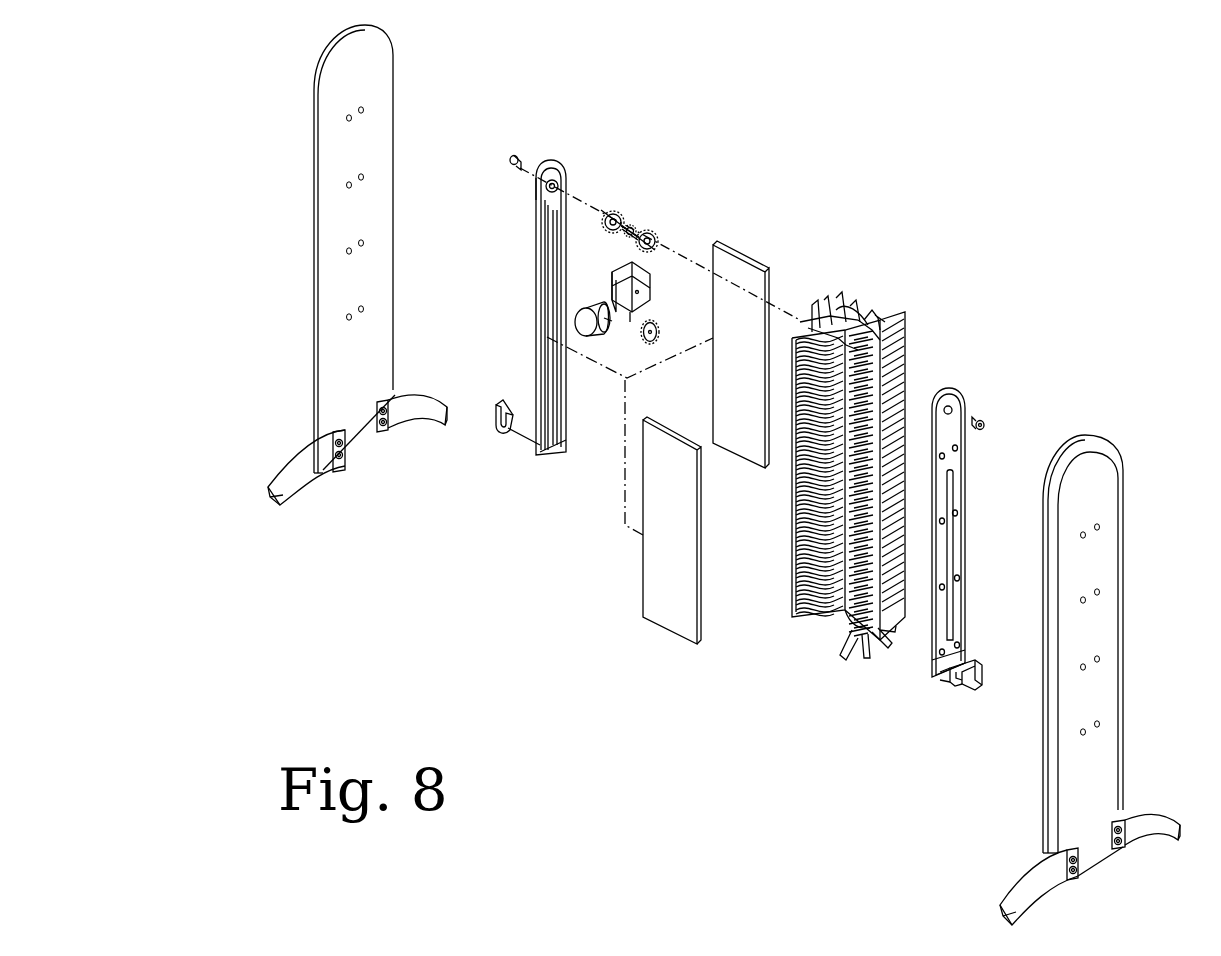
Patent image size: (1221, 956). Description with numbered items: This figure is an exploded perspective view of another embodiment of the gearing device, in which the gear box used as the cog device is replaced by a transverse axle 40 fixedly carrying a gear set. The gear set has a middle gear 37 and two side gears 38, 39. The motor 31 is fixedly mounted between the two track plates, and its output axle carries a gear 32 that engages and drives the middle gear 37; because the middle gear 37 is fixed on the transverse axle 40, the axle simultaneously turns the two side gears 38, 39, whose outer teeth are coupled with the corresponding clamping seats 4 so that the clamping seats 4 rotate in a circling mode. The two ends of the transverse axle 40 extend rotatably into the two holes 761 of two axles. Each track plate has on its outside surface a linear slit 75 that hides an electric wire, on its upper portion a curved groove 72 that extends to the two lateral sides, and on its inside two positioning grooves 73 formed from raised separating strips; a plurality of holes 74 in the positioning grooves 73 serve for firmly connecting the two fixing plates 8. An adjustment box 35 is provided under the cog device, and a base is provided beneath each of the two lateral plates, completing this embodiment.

The clamping seat 4 is at (845, 305).
The fixing plate 8 is at (743, 273).
The motor 31 is at (584, 312).
The gear 32 is at (654, 331).
The adjustment box 35 is at (958, 698).
The middle gear 37 is at (633, 220).
The side gear 38 is at (613, 208).
The side gear 39 is at (655, 232).
The transverse axle 40 is at (660, 238).
The curved groove 72 is at (549, 232).
The positioning groove 73 is at (553, 306).
The hole 74 is at (960, 578).
The linear slit 75 is at (950, 507).
The hole 761 is at (540, 166).